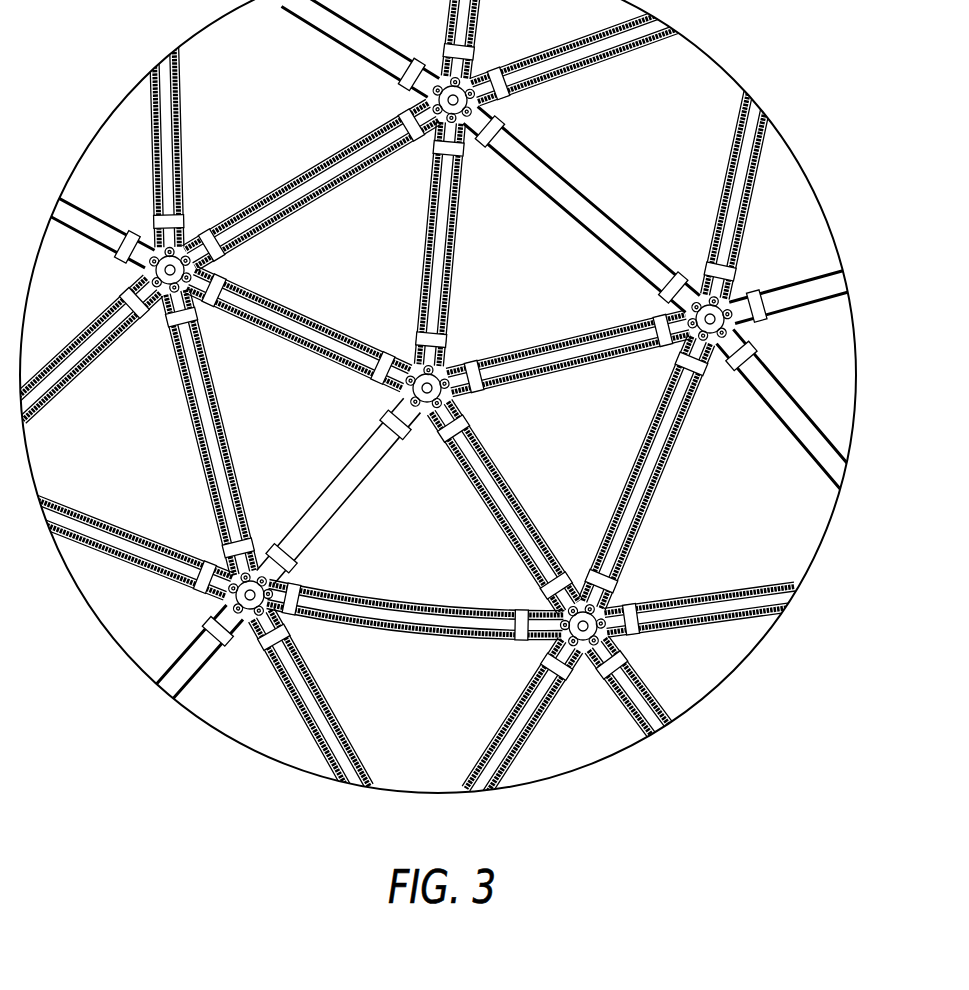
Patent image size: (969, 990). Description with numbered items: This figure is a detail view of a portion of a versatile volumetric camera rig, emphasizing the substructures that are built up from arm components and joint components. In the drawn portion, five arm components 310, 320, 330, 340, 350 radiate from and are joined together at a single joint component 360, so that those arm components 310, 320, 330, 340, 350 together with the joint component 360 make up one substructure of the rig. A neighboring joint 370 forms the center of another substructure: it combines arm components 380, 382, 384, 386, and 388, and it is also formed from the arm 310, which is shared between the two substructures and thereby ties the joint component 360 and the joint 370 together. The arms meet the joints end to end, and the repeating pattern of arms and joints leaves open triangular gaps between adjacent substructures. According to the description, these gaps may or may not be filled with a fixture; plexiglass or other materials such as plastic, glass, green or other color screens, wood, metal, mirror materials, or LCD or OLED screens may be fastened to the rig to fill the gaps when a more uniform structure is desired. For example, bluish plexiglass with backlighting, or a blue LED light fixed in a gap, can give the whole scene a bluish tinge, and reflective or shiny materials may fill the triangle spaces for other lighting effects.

The arm component 310 is at (253, 311).
The arm component 320 is at (445, 235).
The arm component 330 is at (550, 356).
The arm component 340 is at (477, 470).
The arm component 350 is at (366, 462).
The joint component 360 is at (441, 373).
The joint 370 is at (187, 245).
The arm component 380 is at (198, 420).
The arm component 382 is at (72, 352).
The arm component 384 is at (83, 225).
The arm component 386 is at (169, 109).
The arm component 388 is at (343, 148).